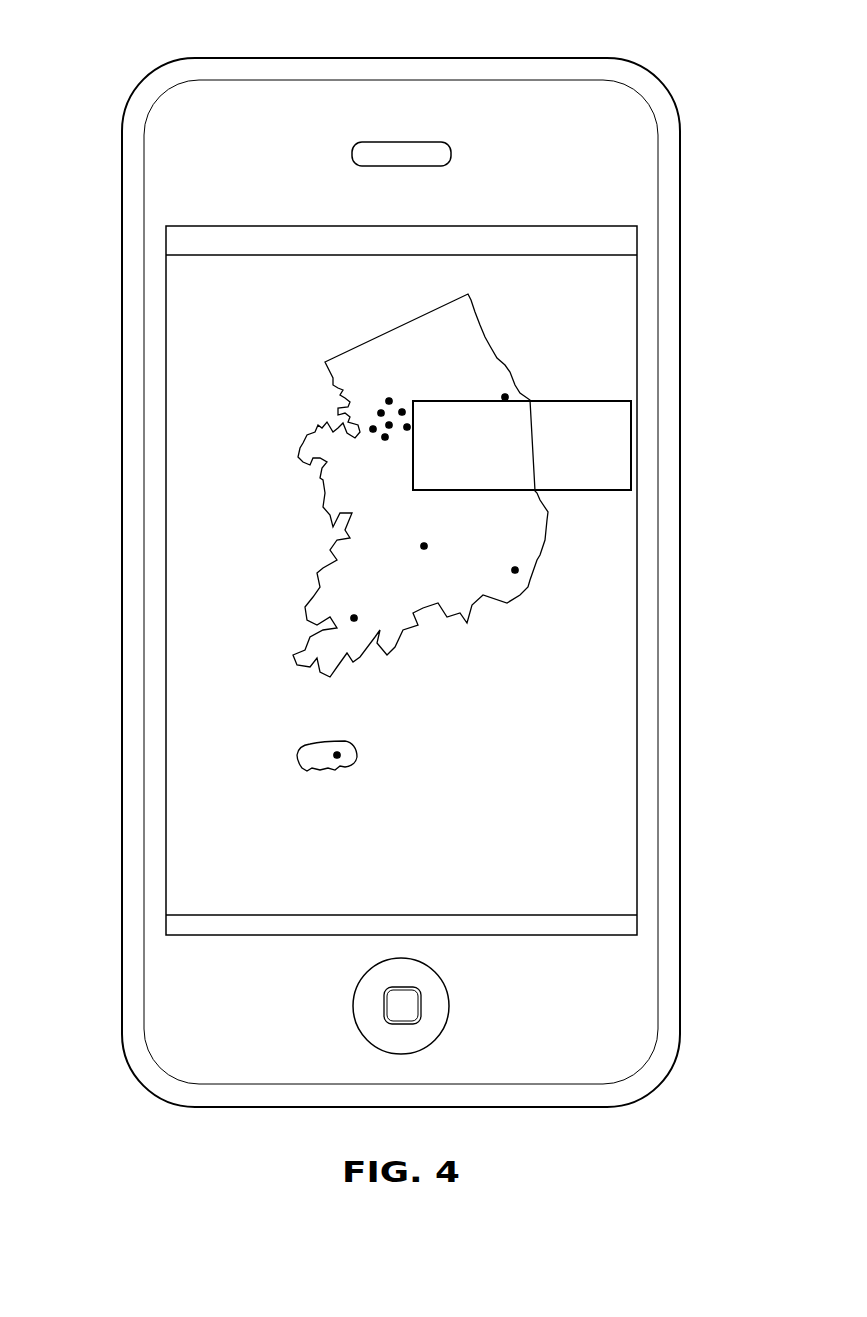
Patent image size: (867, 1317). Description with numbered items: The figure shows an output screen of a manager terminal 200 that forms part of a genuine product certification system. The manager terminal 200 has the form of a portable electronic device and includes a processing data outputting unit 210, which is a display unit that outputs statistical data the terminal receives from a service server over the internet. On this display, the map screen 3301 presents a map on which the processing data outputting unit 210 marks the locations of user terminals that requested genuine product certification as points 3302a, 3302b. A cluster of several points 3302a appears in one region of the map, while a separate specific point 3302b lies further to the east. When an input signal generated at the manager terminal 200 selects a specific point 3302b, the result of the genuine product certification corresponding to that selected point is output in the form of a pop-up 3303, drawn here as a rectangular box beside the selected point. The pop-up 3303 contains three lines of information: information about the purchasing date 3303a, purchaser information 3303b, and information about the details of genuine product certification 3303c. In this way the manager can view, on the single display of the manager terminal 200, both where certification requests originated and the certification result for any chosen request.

The manager terminal 200 is at (542, 60).
The processing data outputting unit 210 is at (166, 297).
The map screen 3301 is at (622, 285).
The point 3302a is at (380, 413).
The specific point 3302b is at (505, 397).
The pop-up 3303 is at (627, 407).
The purchasing date information 3303a is at (558, 416).
The purchaser information 3303b is at (605, 443).
The details of genuine product certification information 3303c is at (625, 473).